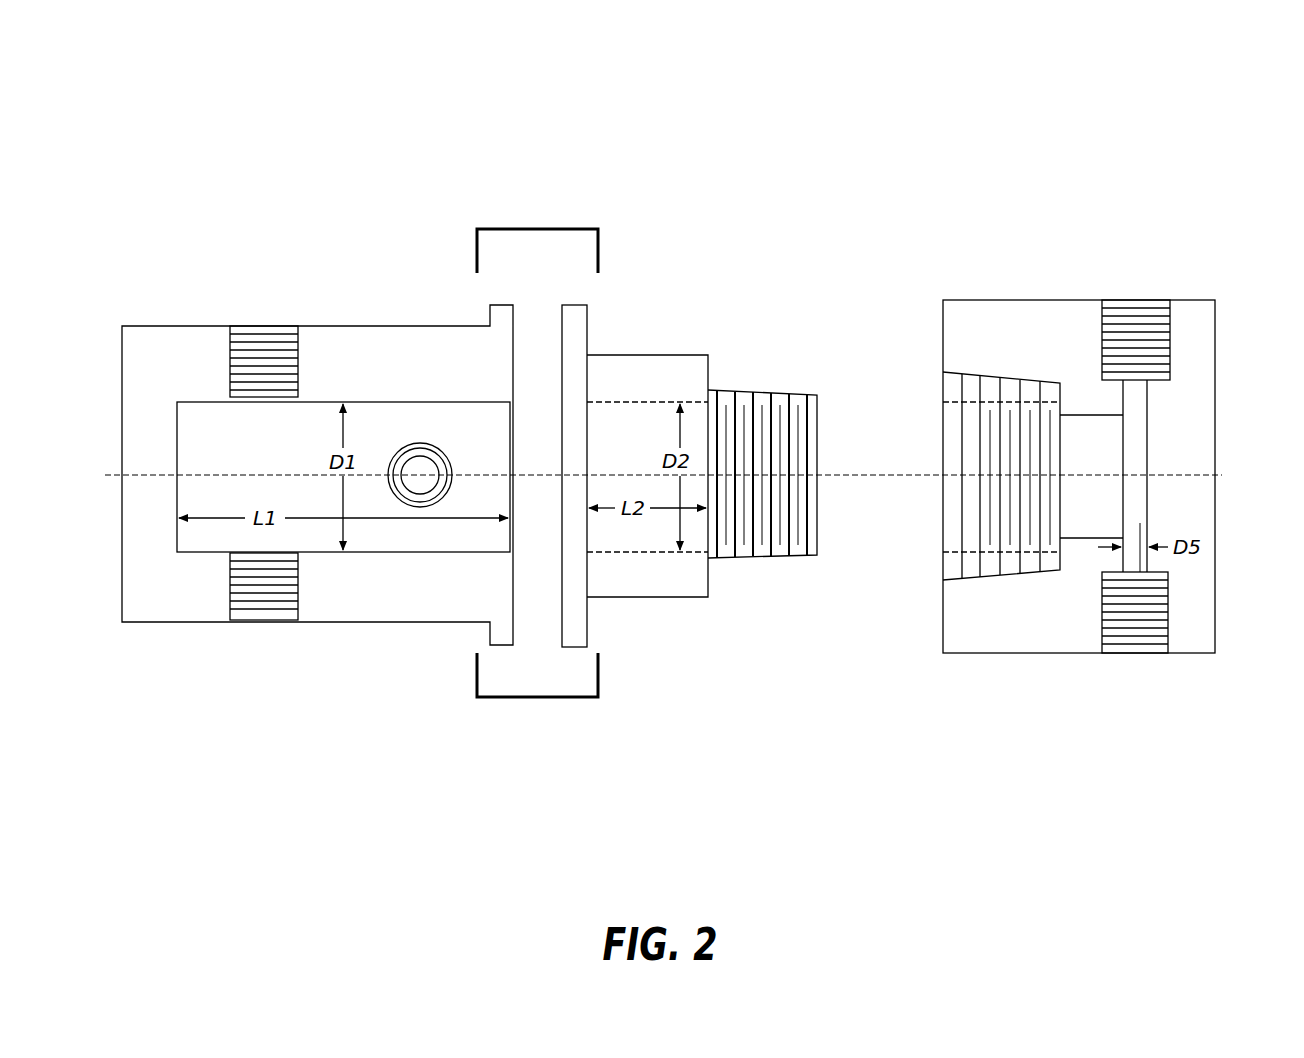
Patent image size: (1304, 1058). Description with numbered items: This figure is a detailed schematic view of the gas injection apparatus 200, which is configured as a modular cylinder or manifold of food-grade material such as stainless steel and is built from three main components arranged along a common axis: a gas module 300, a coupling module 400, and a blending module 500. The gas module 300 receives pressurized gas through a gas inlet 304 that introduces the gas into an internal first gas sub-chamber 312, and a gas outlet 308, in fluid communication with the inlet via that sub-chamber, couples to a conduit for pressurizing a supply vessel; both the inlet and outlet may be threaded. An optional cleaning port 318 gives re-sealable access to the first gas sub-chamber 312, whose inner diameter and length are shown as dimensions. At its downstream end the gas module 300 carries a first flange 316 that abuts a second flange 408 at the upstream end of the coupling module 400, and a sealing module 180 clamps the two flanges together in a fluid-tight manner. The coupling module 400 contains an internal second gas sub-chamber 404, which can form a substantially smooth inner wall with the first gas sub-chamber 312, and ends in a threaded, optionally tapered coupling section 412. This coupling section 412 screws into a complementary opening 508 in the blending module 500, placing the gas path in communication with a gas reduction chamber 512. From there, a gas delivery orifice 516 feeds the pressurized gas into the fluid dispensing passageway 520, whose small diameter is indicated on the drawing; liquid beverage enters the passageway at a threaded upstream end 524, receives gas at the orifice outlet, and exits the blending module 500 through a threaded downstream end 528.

The gas injection apparatus 200 is at (181, 155).
The gas module 300 is at (128, 362).
The gas inlet 304 is at (270, 328).
The gas outlet 308 is at (256, 620).
The first gas sub-chamber 312 is at (262, 459).
The first flange 316 is at (488, 322).
The cleaning port 318 is at (421, 443).
The sealing module 180 is at (563, 697).
The coupling module 400 is at (698, 481).
The second gas sub-chamber 404 is at (639, 443).
The second flange 408 is at (573, 337).
The coupling section 412 is at (768, 558).
The blending module 500 is at (960, 300).
The opening 508 is at (953, 440).
The gas reduction chamber 512 is at (1087, 510).
The gas delivery orifice 516 is at (1122, 466).
The fluid dispensing passageway 520 is at (1137, 487).
The upstream end 524 is at (1140, 655).
The downstream end 528 is at (1125, 300).